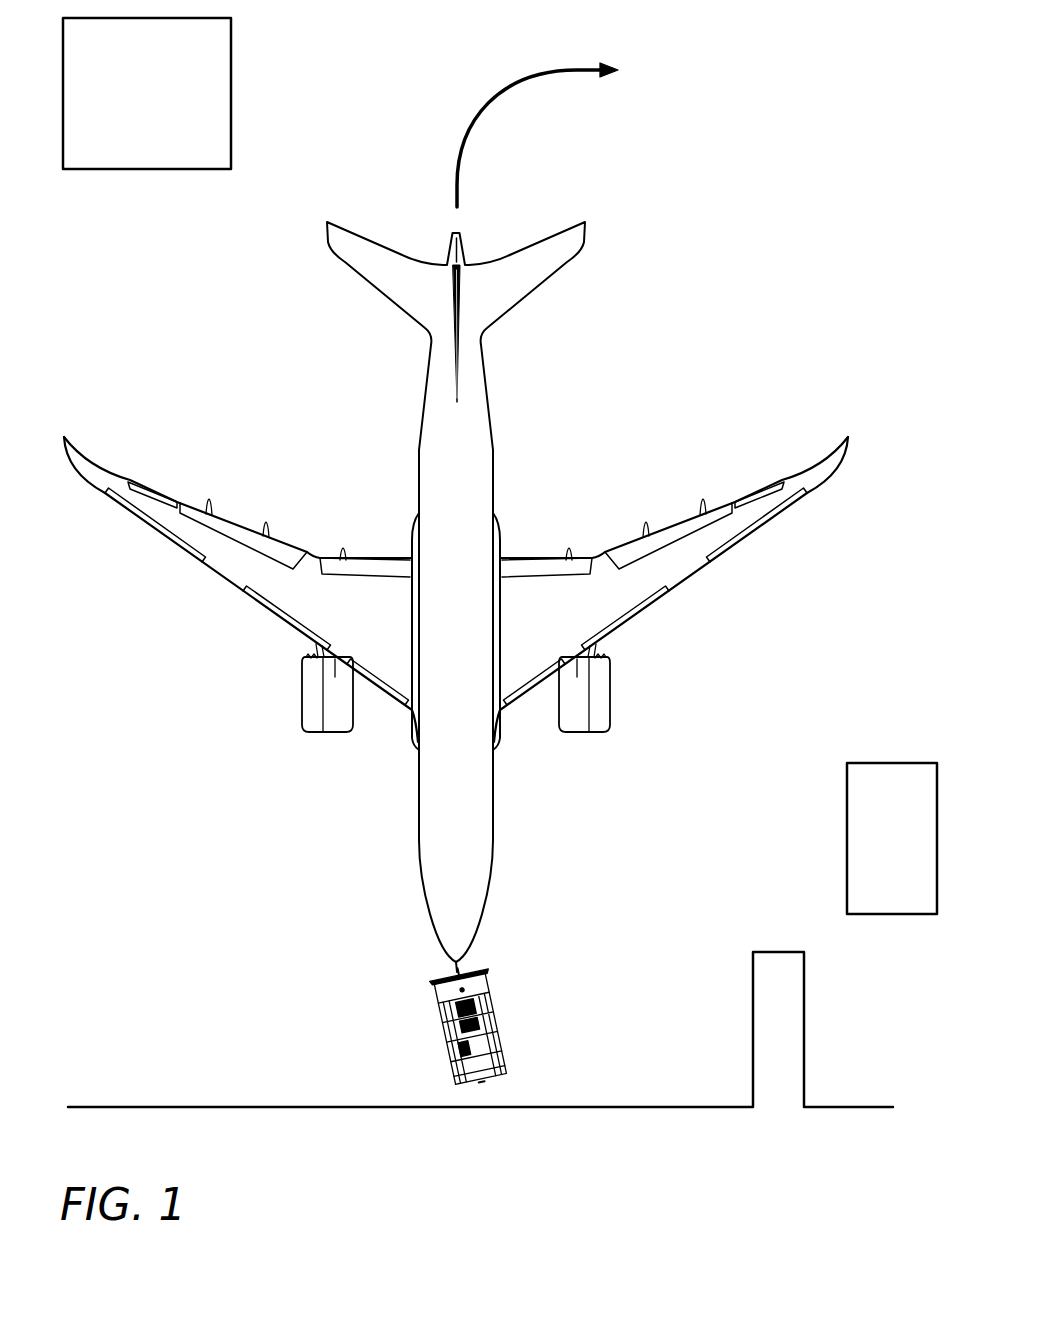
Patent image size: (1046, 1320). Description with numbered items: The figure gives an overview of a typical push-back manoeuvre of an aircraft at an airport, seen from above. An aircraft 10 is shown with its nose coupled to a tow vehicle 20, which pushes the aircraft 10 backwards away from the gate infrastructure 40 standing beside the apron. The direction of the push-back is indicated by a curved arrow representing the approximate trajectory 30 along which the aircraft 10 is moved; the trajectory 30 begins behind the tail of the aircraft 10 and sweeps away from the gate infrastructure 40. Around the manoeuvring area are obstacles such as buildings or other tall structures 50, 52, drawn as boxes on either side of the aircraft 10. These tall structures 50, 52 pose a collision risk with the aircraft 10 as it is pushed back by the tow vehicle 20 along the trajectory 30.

The aircraft 10 is at (758, 535).
The tow vehicle 20 is at (498, 1030).
The approximate trajectory 30 is at (620, 70).
The gate infrastructure 40 is at (777, 951).
The tall structure 50 is at (160, 107).
The tall structure 52 is at (907, 851).